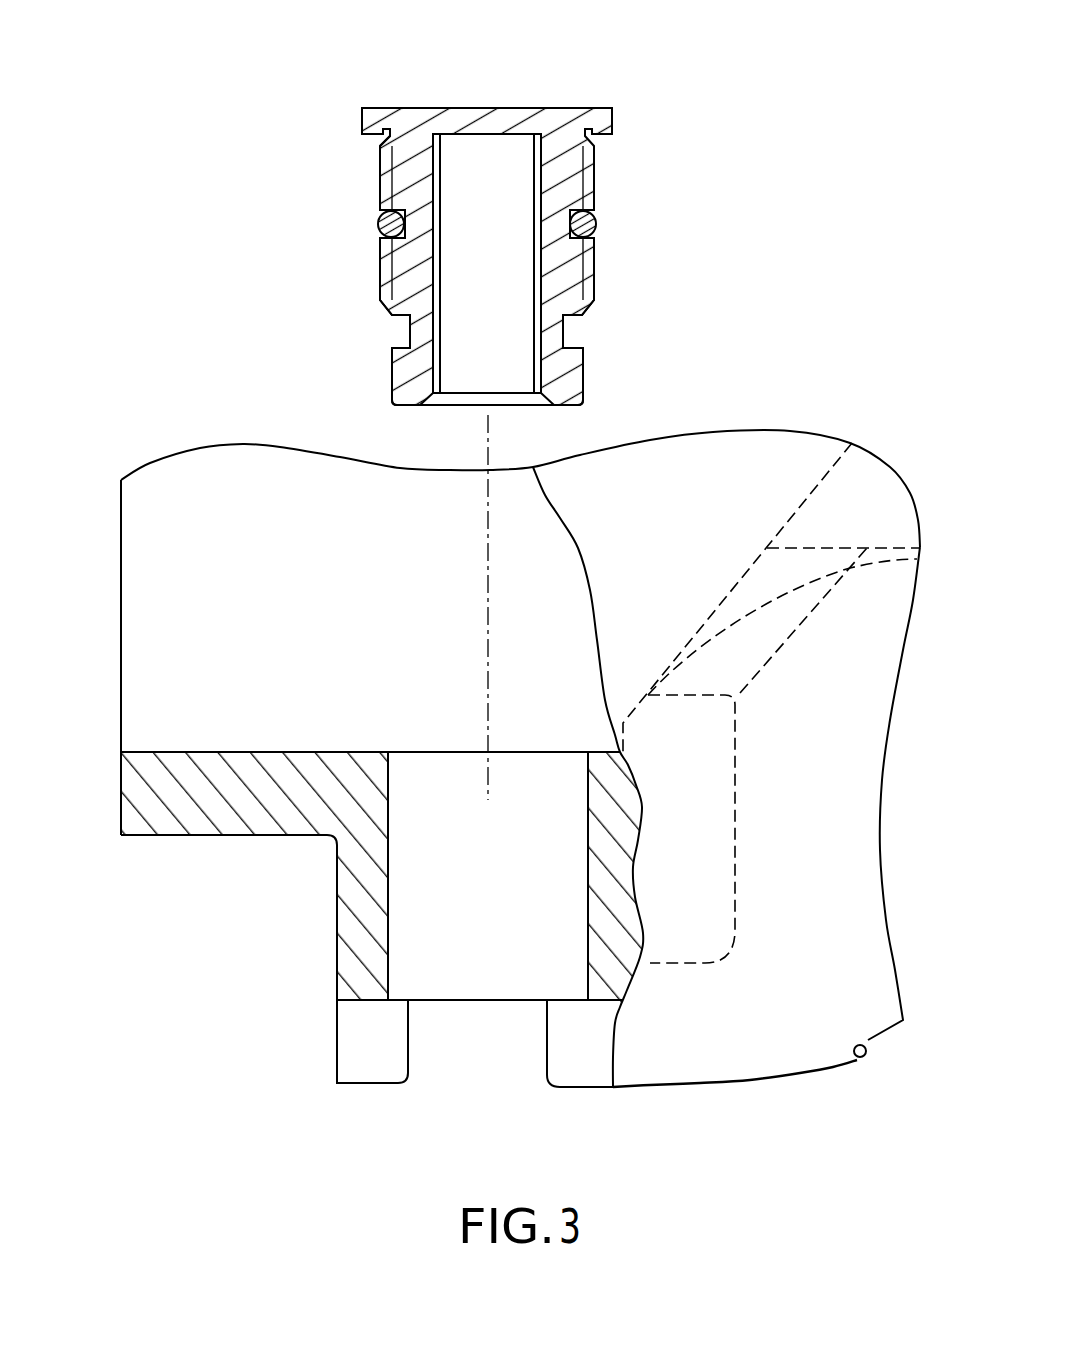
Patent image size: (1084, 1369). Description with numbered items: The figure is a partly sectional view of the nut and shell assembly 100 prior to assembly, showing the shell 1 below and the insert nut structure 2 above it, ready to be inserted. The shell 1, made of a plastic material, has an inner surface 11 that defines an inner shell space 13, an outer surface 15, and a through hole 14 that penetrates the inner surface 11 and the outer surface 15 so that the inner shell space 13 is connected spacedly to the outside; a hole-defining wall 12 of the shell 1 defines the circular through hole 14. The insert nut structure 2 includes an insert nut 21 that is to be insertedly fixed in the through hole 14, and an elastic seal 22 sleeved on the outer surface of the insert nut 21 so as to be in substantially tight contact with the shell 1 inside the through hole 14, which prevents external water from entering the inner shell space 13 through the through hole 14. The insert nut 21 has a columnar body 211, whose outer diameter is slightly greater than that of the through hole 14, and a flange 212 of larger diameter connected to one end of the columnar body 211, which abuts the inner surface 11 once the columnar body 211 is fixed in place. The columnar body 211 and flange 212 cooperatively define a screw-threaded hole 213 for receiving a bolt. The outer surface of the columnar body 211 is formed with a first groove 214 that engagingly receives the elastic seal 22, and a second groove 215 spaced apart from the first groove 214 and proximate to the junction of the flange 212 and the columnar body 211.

The nut and shell assembly 100 is at (237, 108).
The shell 1 is at (718, 1084).
The inner surface 11 is at (218, 752).
The hole-defining wall 12 is at (388, 928).
The inner shell space 13 is at (185, 675).
The through hole 14 is at (512, 1045).
The outer surface 15 is at (367, 1000).
The insert nut structure 2 is at (340, 197).
The insert nut 21 is at (597, 181).
The columnar body 211 is at (573, 277).
The flange 212 is at (603, 122).
The screw-threaded hole 213 is at (497, 170).
The first groove 214 is at (377, 235).
The second groove 215 is at (378, 142).
The elastic seal 22 is at (595, 218).